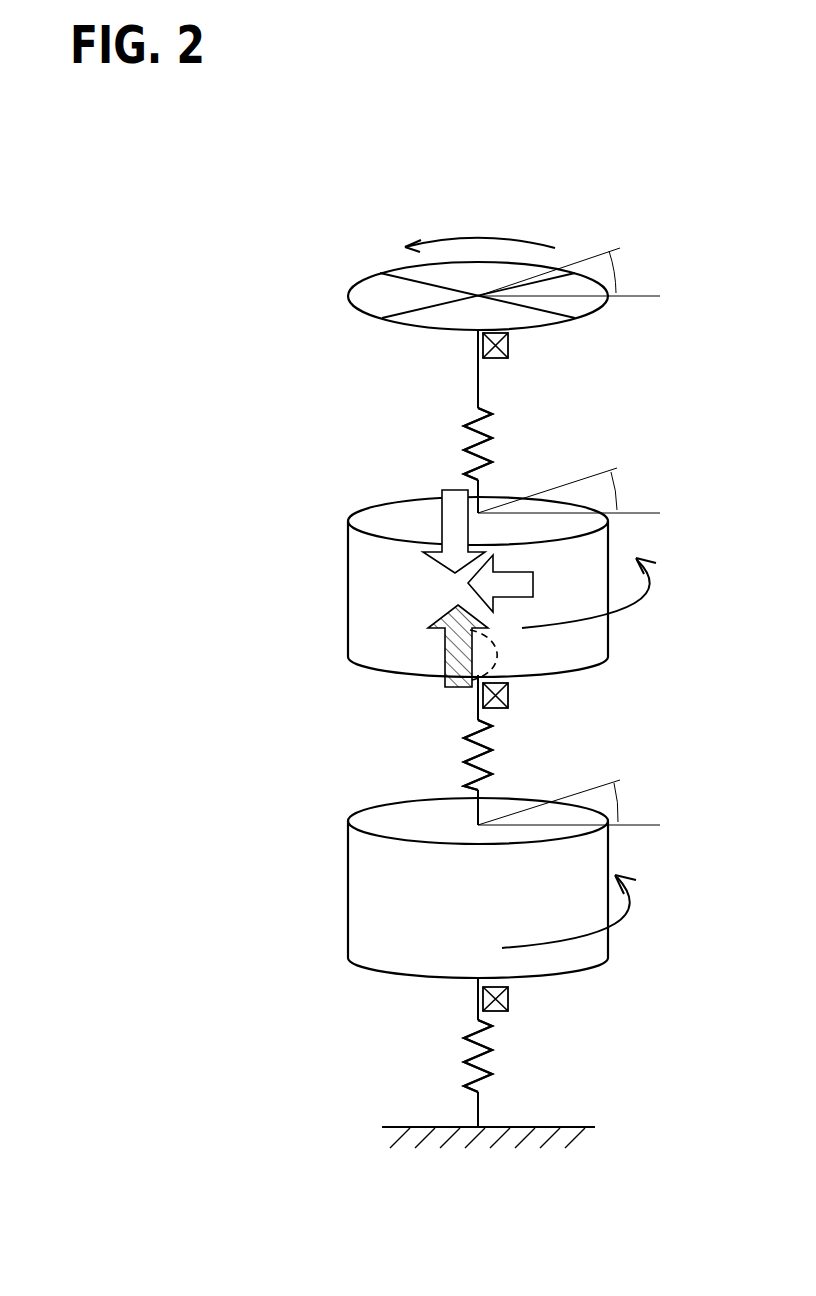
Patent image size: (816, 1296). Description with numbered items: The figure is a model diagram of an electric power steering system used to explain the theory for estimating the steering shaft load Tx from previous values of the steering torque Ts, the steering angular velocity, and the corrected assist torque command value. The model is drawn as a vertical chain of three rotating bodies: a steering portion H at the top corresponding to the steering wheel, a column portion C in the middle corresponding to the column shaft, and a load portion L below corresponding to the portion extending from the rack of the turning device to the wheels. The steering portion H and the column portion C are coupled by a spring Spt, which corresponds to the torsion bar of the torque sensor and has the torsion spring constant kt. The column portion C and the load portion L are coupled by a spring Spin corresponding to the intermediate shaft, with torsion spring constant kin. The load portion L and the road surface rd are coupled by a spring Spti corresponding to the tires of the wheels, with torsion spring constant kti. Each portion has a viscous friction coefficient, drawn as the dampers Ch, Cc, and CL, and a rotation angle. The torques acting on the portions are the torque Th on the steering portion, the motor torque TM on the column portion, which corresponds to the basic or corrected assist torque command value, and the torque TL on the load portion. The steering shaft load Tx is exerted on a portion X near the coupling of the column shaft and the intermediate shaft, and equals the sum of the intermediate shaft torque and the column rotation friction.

The steering portion H is at (319, 302).
The column portion C is at (319, 612).
The load portion L is at (319, 906).
The viscous friction coefficient of the steering portion Ch is at (514, 349).
The viscous friction coefficient of the column portion Cc is at (514, 700).
The viscous friction coefficient of the load portion CL is at (513, 1004).
The torsion spring constant of the spring Spt kt is at (460, 444).
The torsion spring constant of the spring Spin kin is at (456, 755).
The torsion spring constant of the spring Spti kti is at (455, 1056).
The spring Spt is at (488, 445).
The spring Spin is at (492, 762).
The spring Spti is at (490, 1062).
The torque of the steering portion Th is at (480, 228).
The motor torque TM is at (508, 583).
The torque of the load portion TL is at (584, 911).
The steering torque Ts is at (445, 523).
The steering shaft load Tx is at (455, 648).
The portion X is at (516, 652).
The road surface rd is at (422, 1127).